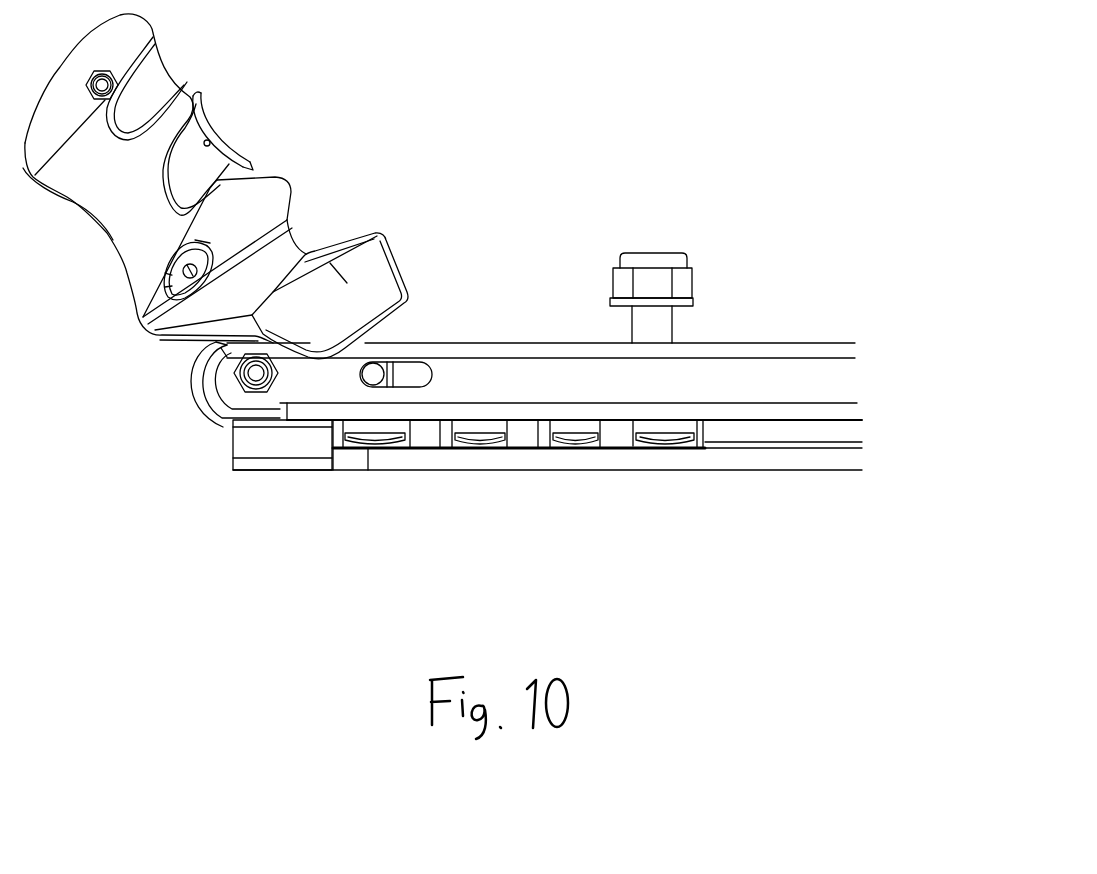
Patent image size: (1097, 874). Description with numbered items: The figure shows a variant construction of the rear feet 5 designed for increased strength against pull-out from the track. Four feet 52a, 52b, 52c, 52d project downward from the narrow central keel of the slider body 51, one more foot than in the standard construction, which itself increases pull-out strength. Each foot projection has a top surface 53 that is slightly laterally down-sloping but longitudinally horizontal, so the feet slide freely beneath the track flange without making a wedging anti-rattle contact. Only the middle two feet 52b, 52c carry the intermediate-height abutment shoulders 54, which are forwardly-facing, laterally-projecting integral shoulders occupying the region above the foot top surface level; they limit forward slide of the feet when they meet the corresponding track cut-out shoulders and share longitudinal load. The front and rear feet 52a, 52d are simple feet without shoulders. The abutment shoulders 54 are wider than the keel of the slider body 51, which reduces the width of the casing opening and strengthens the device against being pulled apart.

The rear feet 5 is at (523, 567).
The slider body 51 is at (620, 432).
The front foot 52a is at (372, 478).
The second foot 52b is at (468, 460).
The third foot 52c is at (568, 460).
The rear foot 52d is at (650, 460).
The top surface 53 is at (667, 442).
The abutment shoulder 54 is at (448, 432).